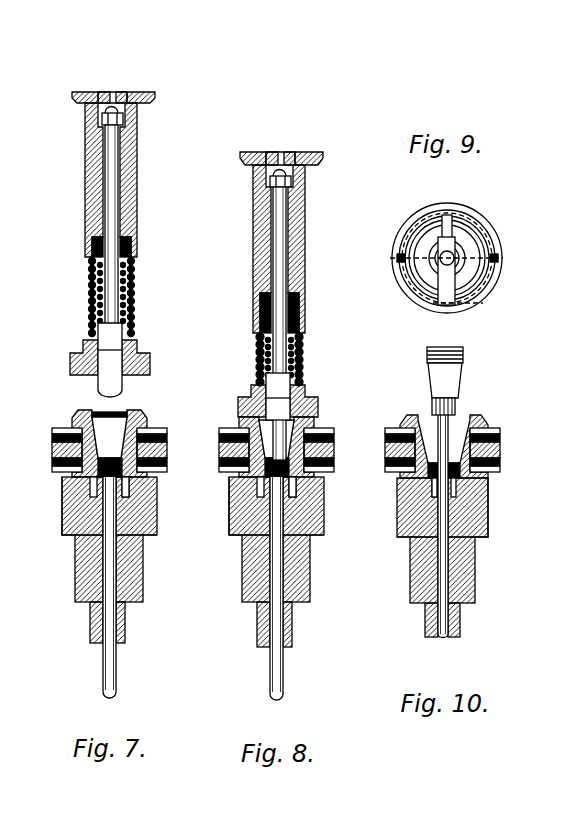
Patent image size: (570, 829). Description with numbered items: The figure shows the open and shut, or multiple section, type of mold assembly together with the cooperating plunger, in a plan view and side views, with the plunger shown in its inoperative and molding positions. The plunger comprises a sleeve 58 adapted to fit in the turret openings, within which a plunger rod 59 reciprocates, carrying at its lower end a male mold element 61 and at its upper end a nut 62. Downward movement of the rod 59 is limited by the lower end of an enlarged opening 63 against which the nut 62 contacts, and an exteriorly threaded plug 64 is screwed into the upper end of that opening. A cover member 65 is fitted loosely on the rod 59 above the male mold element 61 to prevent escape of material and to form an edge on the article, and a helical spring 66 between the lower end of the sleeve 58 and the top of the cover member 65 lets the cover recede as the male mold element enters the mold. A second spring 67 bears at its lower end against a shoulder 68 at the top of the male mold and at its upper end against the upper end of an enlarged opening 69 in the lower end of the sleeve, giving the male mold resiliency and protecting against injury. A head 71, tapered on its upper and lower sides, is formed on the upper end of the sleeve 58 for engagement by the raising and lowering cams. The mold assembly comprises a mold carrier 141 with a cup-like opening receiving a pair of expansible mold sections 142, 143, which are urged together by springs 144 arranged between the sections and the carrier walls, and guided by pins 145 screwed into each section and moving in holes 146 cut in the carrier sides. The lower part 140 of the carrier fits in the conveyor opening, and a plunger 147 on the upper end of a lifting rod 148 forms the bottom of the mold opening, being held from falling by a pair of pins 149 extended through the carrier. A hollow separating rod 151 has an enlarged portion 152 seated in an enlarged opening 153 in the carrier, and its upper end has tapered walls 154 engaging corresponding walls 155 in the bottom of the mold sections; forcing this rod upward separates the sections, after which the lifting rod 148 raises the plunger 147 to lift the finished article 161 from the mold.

In FIG. 7, the sleeve 58 is at (137, 195).
In FIG. 8, the sleeve 58 is at (300, 249).
In FIG. 7, the plunger rod 59 is at (120, 158).
In FIG. 8, the plunger rod 59 is at (309, 323).
In FIG. 7, the male mold element 61 is at (121, 380).
In FIG. 8, the male mold element 61 is at (256, 393).
In FIG. 7, the nut 62 is at (102, 120).
In FIG. 8, the nut 62 is at (251, 186).
In FIG. 7, the enlarged opening 63 is at (122, 110).
In FIG. 8, the enlarged opening 63 is at (311, 180).
In FIG. 7, the exteriorly threaded plug 64 is at (118, 92).
In FIG. 8, the exteriorly threaded plug 64 is at (298, 141).
In FIG. 7, the cover member 65 is at (150, 355).
In FIG. 8, the cover member 65 is at (293, 393).
In FIG. 7, the helical spring 66 is at (135, 285).
In FIG. 8, the helical spring 66 is at (320, 349).
In FIG. 7, the second spring 67 is at (88, 285).
In FIG. 8, the second spring 67 is at (238, 358).
In FIG. 7, the shoulder 68 is at (128, 305).
In FIG. 8, the shoulder 68 is at (307, 358).
In FIG. 7, the enlarged opening 69 is at (92, 240).
In FIG. 8, the enlarged opening 69 is at (256, 308).
In FIG. 7, the head 71 is at (150, 95).
In FIG. 8, the head 71 is at (298, 153).
In FIG. 7, the lower part of the carrier 140 is at (75, 552).
In FIG. 8, the lower part of the carrier 140 is at (258, 568).
In FIG. 10, the lower part of the carrier 140 is at (425, 570).
In FIG. 7, the mold carrier 141 is at (157, 518).
In FIG. 8, the mold carrier 141 is at (302, 507).
In FIG. 9, the mold carrier 141 is at (470, 206).
In FIG. 10, the mold carrier 141 is at (417, 508).
In FIG. 7, the mold section 142 is at (90, 410).
In FIG. 8, the mold section 142 is at (237, 436).
In FIG. 9, the mold section 142 is at (417, 229).
In FIG. 10, the mold section 142 is at (419, 446).
In FIG. 7, the mold section 143 is at (139, 413).
In FIG. 8, the mold section 143 is at (318, 438).
In FIG. 9, the mold section 143 is at (480, 240).
In FIG. 10, the mold section 143 is at (468, 446).
In FIG. 7, the springs 144 is at (52, 450).
In FIG. 8, the springs 144 is at (281, 452).
In FIG. 10, the springs 144 is at (442, 452).
In FIG. 7, the pins 145 is at (60, 428).
In FIG. 8, the pins 145 is at (281, 451).
In FIG. 9, the pins 145 is at (397, 259).
In FIG. 10, the pins 145 is at (442, 452).
In FIG. 7, the holes 146 is at (52, 437).
In FIG. 8, the holes 146 is at (281, 453).
In FIG. 10, the holes 146 is at (442, 453).
In FIG. 7, the plunger 147 is at (104, 458).
In FIG. 8, the plunger 147 is at (276, 439).
In FIG. 9, the plunger 147 is at (447, 218).
In FIG. 10, the plunger 147 is at (467, 396).
In FIG. 7, the lifting rod 148 is at (116, 677).
In FIG. 8, the lifting rod 148 is at (301, 588).
In FIG. 10, the lifting rod 148 is at (465, 531).
In FIG. 7, the pins 149 is at (90, 490).
In FIG. 8, the pins 149 is at (286, 501).
In FIG. 9, the pins 149 is at (447, 303).
In FIG. 10, the pins 149 is at (441, 500).
In FIG. 7, the hollow separating rod 151 is at (122, 618).
In FIG. 8, the hollow separating rod 151 is at (297, 625).
In FIG. 10, the hollow separating rod 151 is at (466, 621).
In FIG. 7, the enlarged portion 152 is at (75, 505).
In FIG. 8, the enlarged portion 152 is at (218, 511).
In FIG. 10, the enlarged portion 152 is at (501, 507).
In FIG. 7, the enlarged opening 153 is at (145, 537).
In FIG. 8, the enlarged opening 153 is at (343, 547).
In FIG. 10, the enlarged opening 153 is at (378, 548).
In FIG. 7, the tapered walls 154 is at (98, 470).
In FIG. 8, the tapered walls 154 is at (240, 484).
In FIG. 9, the tapered walls 154 is at (468, 256).
In FIG. 10, the tapered walls 154 is at (481, 433).
In FIG. 7, the walls 155 is at (127, 482).
In FIG. 8, the walls 155 is at (321, 492).
In FIG. 10, the walls 155 is at (401, 492).
In FIG. 10, the finished article 161 is at (423, 372).